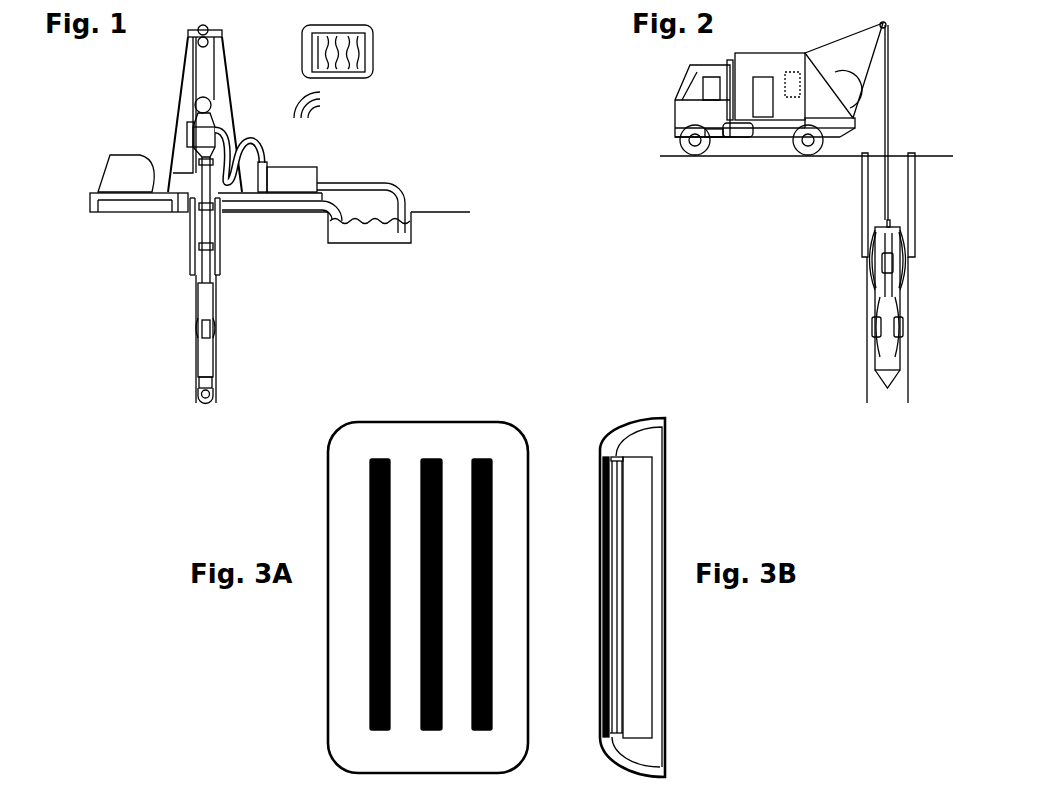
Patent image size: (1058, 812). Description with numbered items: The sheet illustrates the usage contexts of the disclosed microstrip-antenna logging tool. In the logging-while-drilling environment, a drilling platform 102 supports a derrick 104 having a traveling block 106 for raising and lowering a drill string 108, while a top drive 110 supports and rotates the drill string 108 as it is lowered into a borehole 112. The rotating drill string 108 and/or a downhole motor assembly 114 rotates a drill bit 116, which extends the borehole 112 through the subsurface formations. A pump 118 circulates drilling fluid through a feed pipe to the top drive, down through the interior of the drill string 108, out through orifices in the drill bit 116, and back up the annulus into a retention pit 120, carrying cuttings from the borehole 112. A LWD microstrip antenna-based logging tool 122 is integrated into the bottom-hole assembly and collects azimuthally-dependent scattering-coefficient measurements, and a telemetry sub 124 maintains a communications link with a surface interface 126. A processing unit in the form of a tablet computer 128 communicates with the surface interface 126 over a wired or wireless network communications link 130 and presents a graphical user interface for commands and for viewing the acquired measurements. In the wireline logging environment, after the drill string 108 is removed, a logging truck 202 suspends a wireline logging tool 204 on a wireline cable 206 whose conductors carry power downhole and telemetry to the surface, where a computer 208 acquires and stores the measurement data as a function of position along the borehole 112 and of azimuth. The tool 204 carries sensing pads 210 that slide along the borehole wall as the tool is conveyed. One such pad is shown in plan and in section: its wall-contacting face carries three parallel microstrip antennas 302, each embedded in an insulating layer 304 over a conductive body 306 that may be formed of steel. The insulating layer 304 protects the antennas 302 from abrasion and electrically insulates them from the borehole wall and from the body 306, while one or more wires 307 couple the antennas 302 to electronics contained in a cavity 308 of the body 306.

In FIG. 1, the drilling platform 102 is at (90, 200).
In FIG. 1, the derrick 104 is at (186, 48).
In FIG. 1, the traveling block 106 is at (196, 103).
In FIG. 1, the drill string 108 is at (200, 277).
In FIG. 1, the top drive 110 is at (199, 128).
In FIG. 1, the borehole 112 is at (195, 312).
In FIG. 2, the borehole 112 is at (862, 226).
In FIG. 1, the downhole motor assembly 114 is at (197, 360).
In FIG. 1, the drill bit 116 is at (197, 392).
In FIG. 1, the pump 118 is at (318, 177).
In FIG. 1, the retention pit 120 is at (328, 232).
In FIG. 1, the LWD microstrip antenna-based logging tool 122 is at (197, 332).
In FIG. 1, the telemetry sub 124 is at (213, 305).
In FIG. 1, the surface interface 126 is at (266, 163).
In FIG. 1, the tablet computer 128 is at (302, 47).
In FIG. 1, the network communications link 130 is at (318, 107).
In FIG. 2, the logging truck 202 is at (747, 53).
In FIG. 2, the wireline logging tool 204 is at (878, 380).
In FIG. 2, the wireline cable 206 is at (888, 147).
In FIG. 2, the computer 208 is at (793, 72).
In FIG. 2, the sensing pad 210 is at (868, 268).
In FIG. 3A, the sensing pad 210 is at (330, 725).
In FIG. 3A, the microstrip antennas 302 is at (472, 460).
In FIG. 3B, the microstrip antennas 302 is at (602, 487).
In FIG. 3B, the insulating layer 304 is at (628, 427).
In FIG. 3B, the conductive body 306 is at (653, 448).
In FIG. 3B, the wires 307 is at (615, 457).
In FIG. 3B, the cavity 308 is at (643, 480).